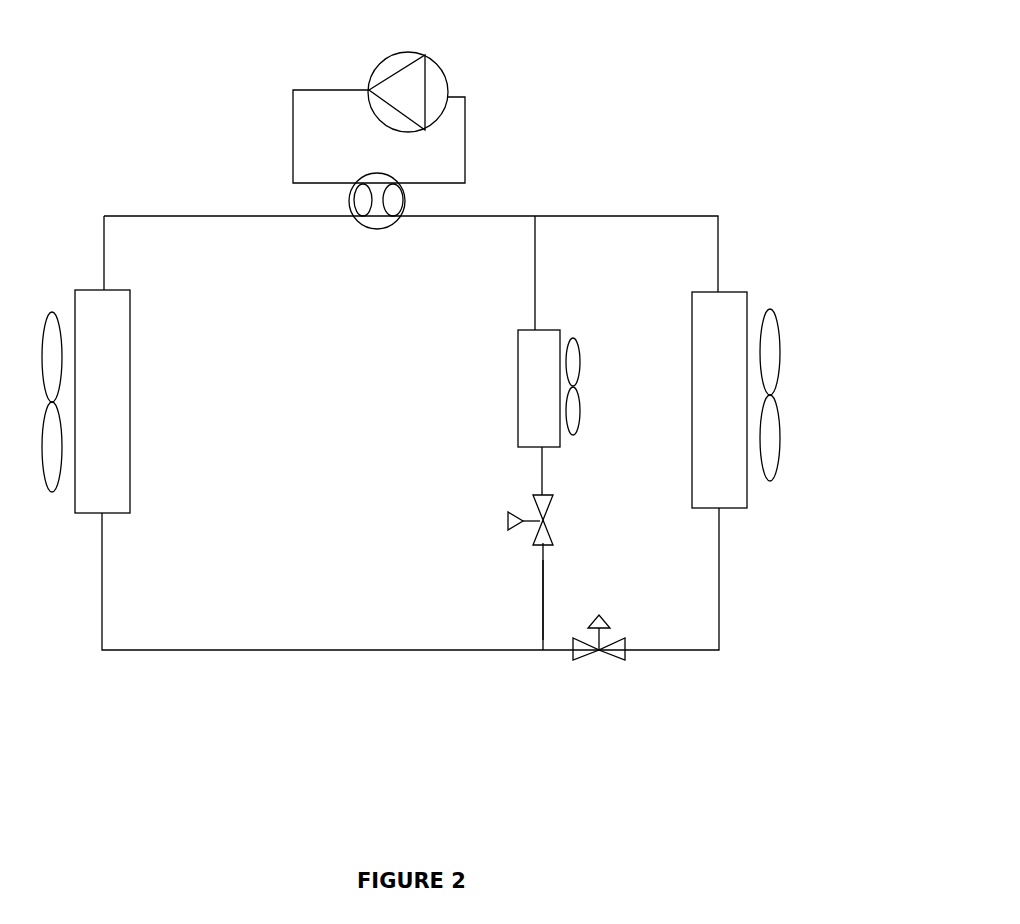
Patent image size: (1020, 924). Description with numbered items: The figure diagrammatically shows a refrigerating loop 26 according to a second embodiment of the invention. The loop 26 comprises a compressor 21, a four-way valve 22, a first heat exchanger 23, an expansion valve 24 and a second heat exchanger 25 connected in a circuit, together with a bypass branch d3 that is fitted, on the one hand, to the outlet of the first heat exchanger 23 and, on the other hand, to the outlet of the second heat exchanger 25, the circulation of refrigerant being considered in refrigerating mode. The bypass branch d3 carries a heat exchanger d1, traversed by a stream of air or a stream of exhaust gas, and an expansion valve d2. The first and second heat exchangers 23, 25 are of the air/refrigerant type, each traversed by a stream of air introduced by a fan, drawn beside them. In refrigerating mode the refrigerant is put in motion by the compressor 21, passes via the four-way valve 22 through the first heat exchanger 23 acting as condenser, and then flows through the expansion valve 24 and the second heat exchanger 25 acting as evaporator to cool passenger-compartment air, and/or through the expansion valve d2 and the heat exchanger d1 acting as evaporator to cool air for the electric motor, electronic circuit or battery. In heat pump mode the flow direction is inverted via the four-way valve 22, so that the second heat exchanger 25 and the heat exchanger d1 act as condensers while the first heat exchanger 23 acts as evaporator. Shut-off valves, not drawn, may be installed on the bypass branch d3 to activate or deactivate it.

The compressor 21 is at (453, 72).
The four-way valve 22 is at (388, 238).
The first heat exchanger 23 is at (138, 508).
The expansion valve 24 is at (627, 667).
The second heat exchanger 25 is at (752, 495).
The refrigerating loop 26 is at (615, 203).
The heat exchanger d1 is at (557, 322).
The expansion valve d2 is at (550, 518).
The bypass branch d3 is at (533, 608).